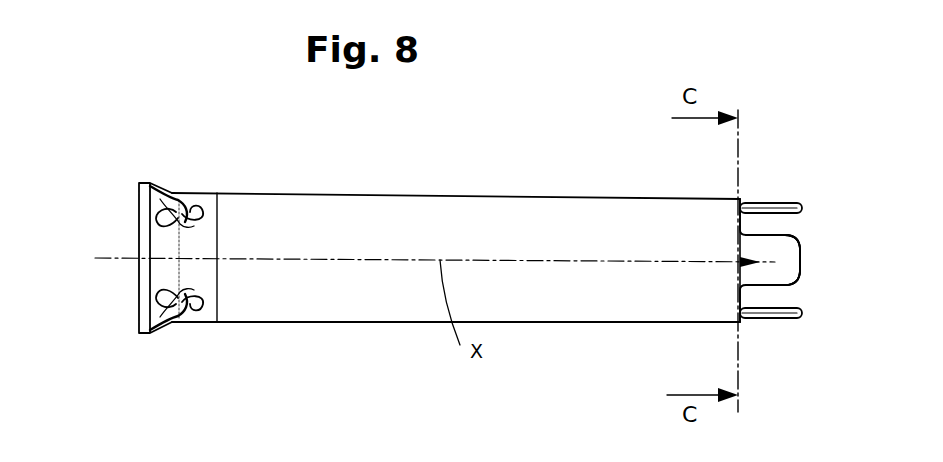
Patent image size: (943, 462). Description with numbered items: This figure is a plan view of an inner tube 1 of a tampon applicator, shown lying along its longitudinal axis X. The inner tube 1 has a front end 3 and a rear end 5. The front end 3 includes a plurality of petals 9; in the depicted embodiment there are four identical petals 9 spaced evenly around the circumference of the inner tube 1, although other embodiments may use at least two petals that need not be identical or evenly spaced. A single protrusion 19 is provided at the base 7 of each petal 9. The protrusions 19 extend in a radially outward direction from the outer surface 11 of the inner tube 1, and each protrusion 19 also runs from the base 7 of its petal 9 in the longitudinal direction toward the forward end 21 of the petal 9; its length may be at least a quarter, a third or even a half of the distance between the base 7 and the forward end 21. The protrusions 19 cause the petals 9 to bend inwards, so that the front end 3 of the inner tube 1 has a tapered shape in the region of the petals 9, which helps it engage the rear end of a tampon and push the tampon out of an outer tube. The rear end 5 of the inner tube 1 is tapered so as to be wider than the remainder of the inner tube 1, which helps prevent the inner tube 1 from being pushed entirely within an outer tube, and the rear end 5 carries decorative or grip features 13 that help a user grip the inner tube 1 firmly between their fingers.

The inner tube 1 is at (460, 192).
The front end 3 is at (768, 323).
The rear end 5 is at (138, 290).
The base 7 is at (738, 244).
The petals 9 is at (792, 203).
The outer surface 11 is at (712, 197).
The grip features 13 is at (181, 325).
The protrusion 19 is at (750, 199).
The forward end 21 is at (800, 252).